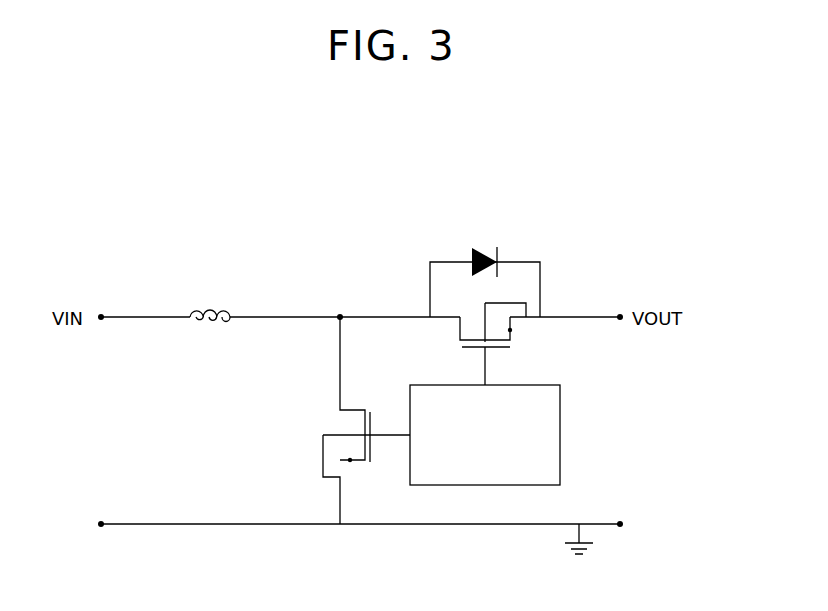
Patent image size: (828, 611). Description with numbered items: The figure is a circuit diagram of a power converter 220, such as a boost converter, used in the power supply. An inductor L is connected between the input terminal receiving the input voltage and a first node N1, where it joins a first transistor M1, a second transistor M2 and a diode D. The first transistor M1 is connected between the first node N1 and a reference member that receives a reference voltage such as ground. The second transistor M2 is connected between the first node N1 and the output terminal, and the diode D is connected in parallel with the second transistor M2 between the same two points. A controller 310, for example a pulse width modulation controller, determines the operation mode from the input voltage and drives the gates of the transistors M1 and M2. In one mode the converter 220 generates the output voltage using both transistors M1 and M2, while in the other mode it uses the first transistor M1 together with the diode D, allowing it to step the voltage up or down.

The power converter 220 is at (523, 253).
The controller 310 is at (560, 437).
The inductor L is at (210, 306).
The diode D is at (485, 275).
The first node N1 is at (339, 306).
The first transistor M1 is at (354, 420).
The second transistor M2 is at (501, 344).